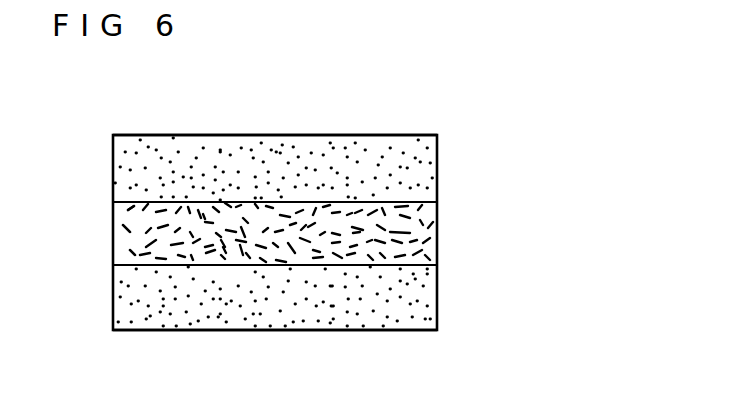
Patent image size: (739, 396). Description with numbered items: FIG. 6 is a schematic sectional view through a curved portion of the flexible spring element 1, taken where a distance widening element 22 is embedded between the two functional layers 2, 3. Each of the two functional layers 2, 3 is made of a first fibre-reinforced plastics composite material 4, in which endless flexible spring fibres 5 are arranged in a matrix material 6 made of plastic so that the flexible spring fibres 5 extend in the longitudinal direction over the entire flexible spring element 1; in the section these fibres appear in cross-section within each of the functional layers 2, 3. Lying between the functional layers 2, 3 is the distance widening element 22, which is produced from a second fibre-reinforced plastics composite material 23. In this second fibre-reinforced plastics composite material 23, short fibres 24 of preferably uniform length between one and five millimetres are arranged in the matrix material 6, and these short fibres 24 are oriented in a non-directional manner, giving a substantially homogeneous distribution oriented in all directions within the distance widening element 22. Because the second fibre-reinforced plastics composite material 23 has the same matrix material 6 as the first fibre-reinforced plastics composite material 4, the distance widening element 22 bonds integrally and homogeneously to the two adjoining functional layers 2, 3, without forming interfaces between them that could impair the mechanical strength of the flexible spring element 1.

The flexible spring element 1 is at (430, 110).
The functional layer 2 is at (432, 158).
The functional layer 3 is at (430, 290).
The first fibre-reinforced plastics composite material 4 is at (371, 138).
The flexible spring fibres 5 is at (220, 152).
The matrix material 6 is at (282, 145).
The distance widening element 22 is at (434, 238).
The second fibre-reinforced plastics composite material 23 is at (428, 212).
The short fibres 24 is at (132, 238).